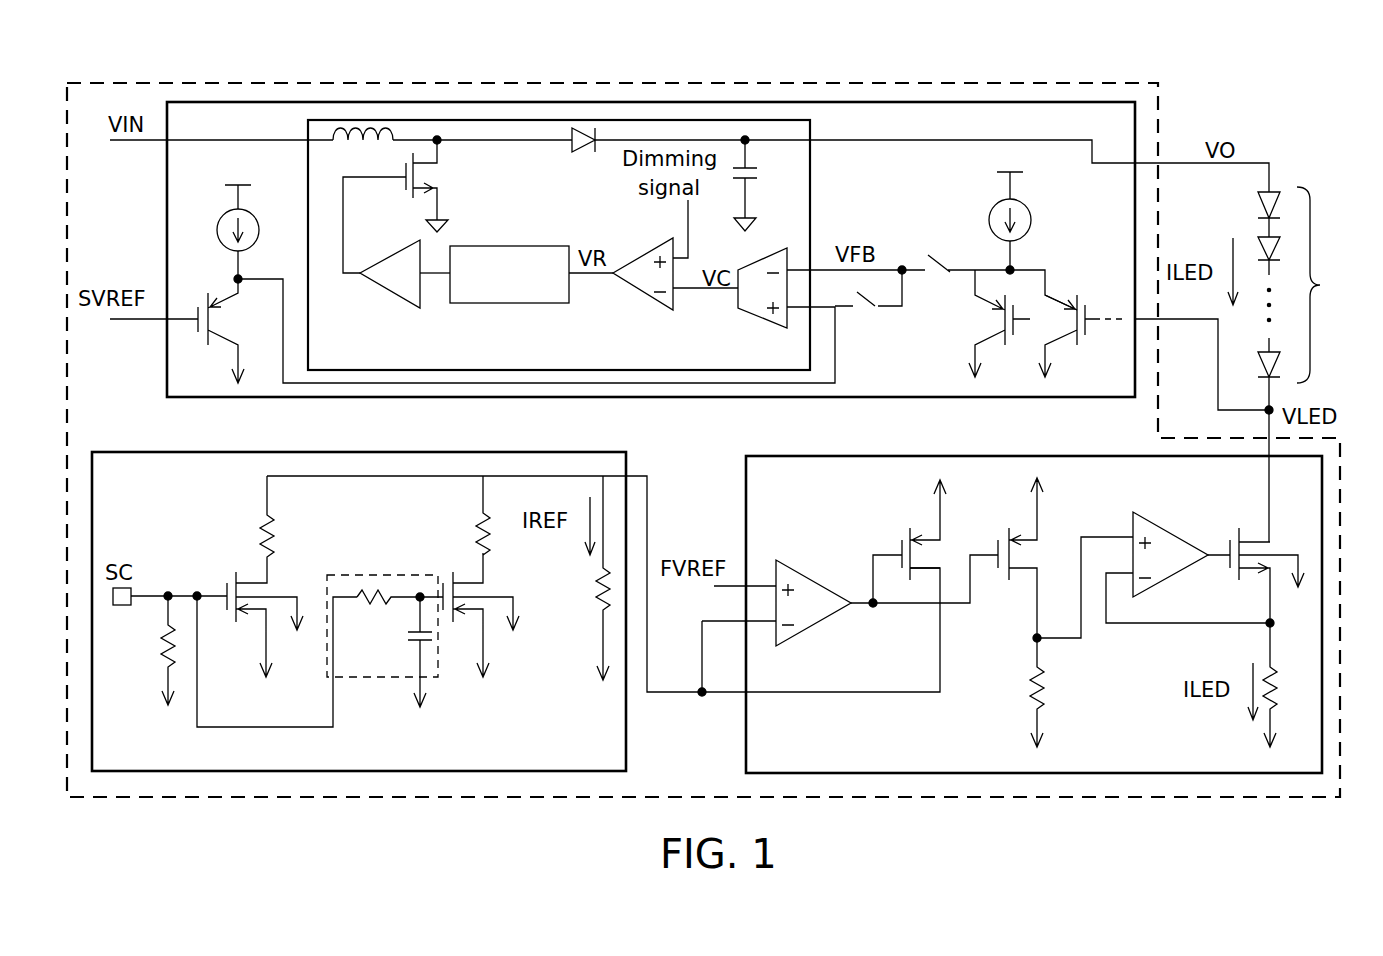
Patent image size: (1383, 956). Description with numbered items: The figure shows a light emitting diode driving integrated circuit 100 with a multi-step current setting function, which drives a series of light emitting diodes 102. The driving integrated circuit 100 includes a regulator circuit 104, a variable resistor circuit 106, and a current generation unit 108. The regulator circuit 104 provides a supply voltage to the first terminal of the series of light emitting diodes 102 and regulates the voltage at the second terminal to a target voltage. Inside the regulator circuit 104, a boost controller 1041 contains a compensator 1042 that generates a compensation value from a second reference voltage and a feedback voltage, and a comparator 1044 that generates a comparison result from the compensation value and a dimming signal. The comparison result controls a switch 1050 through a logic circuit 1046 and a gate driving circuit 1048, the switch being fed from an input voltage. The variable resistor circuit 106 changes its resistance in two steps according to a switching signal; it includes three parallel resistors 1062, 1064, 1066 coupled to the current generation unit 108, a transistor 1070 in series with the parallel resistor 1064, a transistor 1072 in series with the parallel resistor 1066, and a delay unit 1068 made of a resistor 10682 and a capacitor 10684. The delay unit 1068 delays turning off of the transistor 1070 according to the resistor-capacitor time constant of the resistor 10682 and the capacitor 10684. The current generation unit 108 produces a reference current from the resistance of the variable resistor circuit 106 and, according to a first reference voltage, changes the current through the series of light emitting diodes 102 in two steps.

The light emitting diode driving integrated circuit 100 is at (1160, 117).
The series of light emitting diodes 102 is at (1320, 285).
The regulator circuit 104 is at (873, 102).
The boost controller 1041 is at (812, 177).
The compensator 1042 is at (760, 322).
The comparator 1044 is at (655, 240).
The logic circuit 1046 is at (500, 246).
The gate driving circuit 1048 is at (390, 298).
The switch 1050 is at (440, 178).
The variable resistor circuit 106 is at (150, 452).
The parallel resistor 1062 is at (605, 600).
The parallel resistor 1064 is at (470, 530).
The parallel resistor 1066 is at (254, 530).
The delay unit 1068 is at (383, 680).
The resistor 10682 is at (375, 579).
The capacitor 10684 is at (400, 632).
The transistor 1070 is at (478, 580).
The transistor 1072 is at (270, 585).
The current generation unit 108 is at (1004, 456).